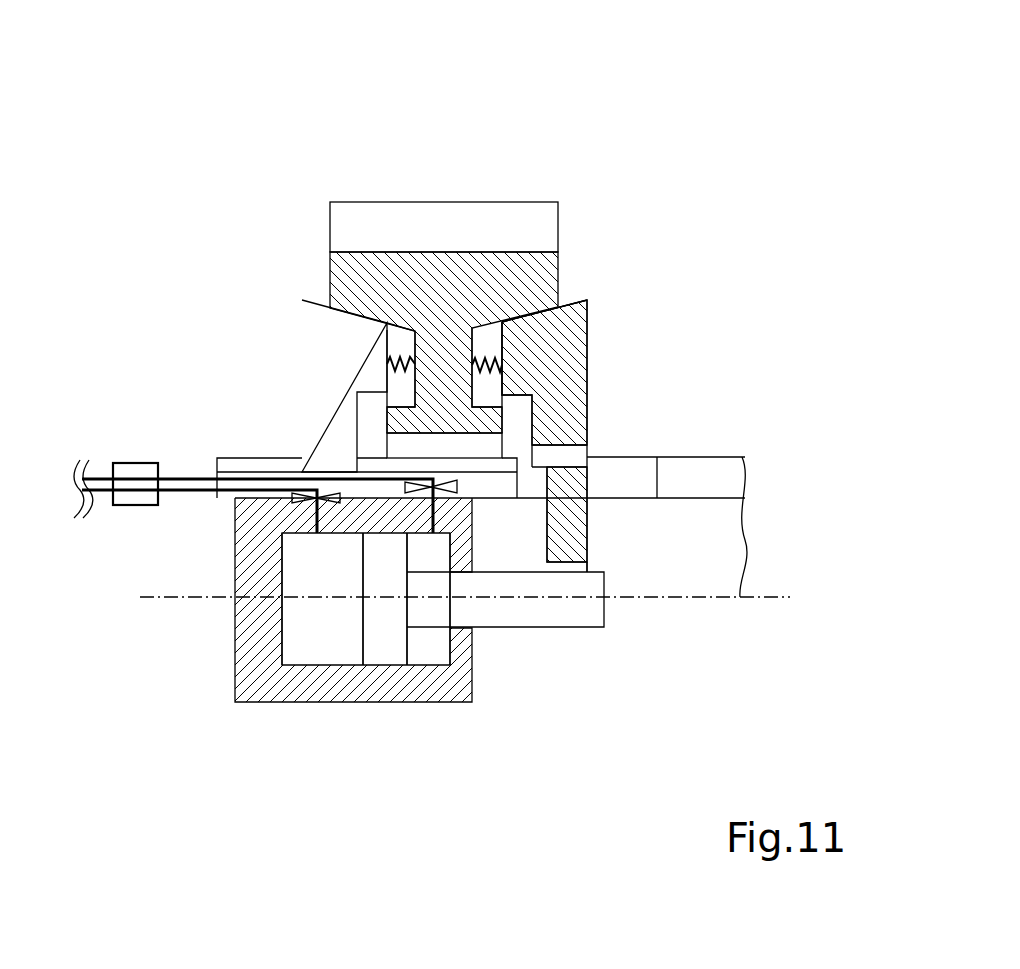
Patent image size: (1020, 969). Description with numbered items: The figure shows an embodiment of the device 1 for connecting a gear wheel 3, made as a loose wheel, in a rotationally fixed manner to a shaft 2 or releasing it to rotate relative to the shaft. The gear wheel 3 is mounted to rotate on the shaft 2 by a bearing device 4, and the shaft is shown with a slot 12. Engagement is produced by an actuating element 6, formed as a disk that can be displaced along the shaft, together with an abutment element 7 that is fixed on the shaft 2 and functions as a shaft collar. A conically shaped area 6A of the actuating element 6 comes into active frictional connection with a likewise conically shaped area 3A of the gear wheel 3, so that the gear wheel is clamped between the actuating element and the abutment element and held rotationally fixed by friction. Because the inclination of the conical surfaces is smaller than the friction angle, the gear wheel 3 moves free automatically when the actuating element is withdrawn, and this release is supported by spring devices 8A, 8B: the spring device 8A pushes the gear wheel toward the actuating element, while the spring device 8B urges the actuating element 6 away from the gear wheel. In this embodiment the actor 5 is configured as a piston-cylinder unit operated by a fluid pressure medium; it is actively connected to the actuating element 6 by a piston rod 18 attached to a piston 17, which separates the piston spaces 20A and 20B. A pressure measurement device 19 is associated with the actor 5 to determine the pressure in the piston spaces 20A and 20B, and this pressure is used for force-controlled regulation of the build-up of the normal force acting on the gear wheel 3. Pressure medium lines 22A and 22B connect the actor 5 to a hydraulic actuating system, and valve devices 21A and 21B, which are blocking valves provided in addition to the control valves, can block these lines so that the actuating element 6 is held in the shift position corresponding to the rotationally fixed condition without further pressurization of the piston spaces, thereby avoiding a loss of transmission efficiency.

The device 1 is at (323, 95).
The shaft 2 is at (263, 467).
The component (gear wheel) 3 is at (347, 218).
The conically shaped area of the component 3A is at (482, 325).
The bearing device 4 is at (485, 445).
The actor (piston-cylinder unit) 5 is at (248, 709).
The actuating element 6 is at (545, 330).
The conical area of the actuating element 6A is at (567, 303).
The abutment element 7 is at (313, 323).
The spring device 8A is at (390, 370).
The spring device 8B is at (473, 367).
The slot 12 is at (618, 467).
The piston 17 is at (383, 647).
The piston rod 18 is at (600, 595).
The pressure measurement device 19 is at (123, 493).
The piston space 20A is at (298, 622).
The piston space 20B is at (428, 643).
The valve device 21A is at (333, 498).
The valve device 21B is at (433, 500).
The pressure medium line 22A is at (197, 490).
The pressure medium line 22B is at (197, 479).